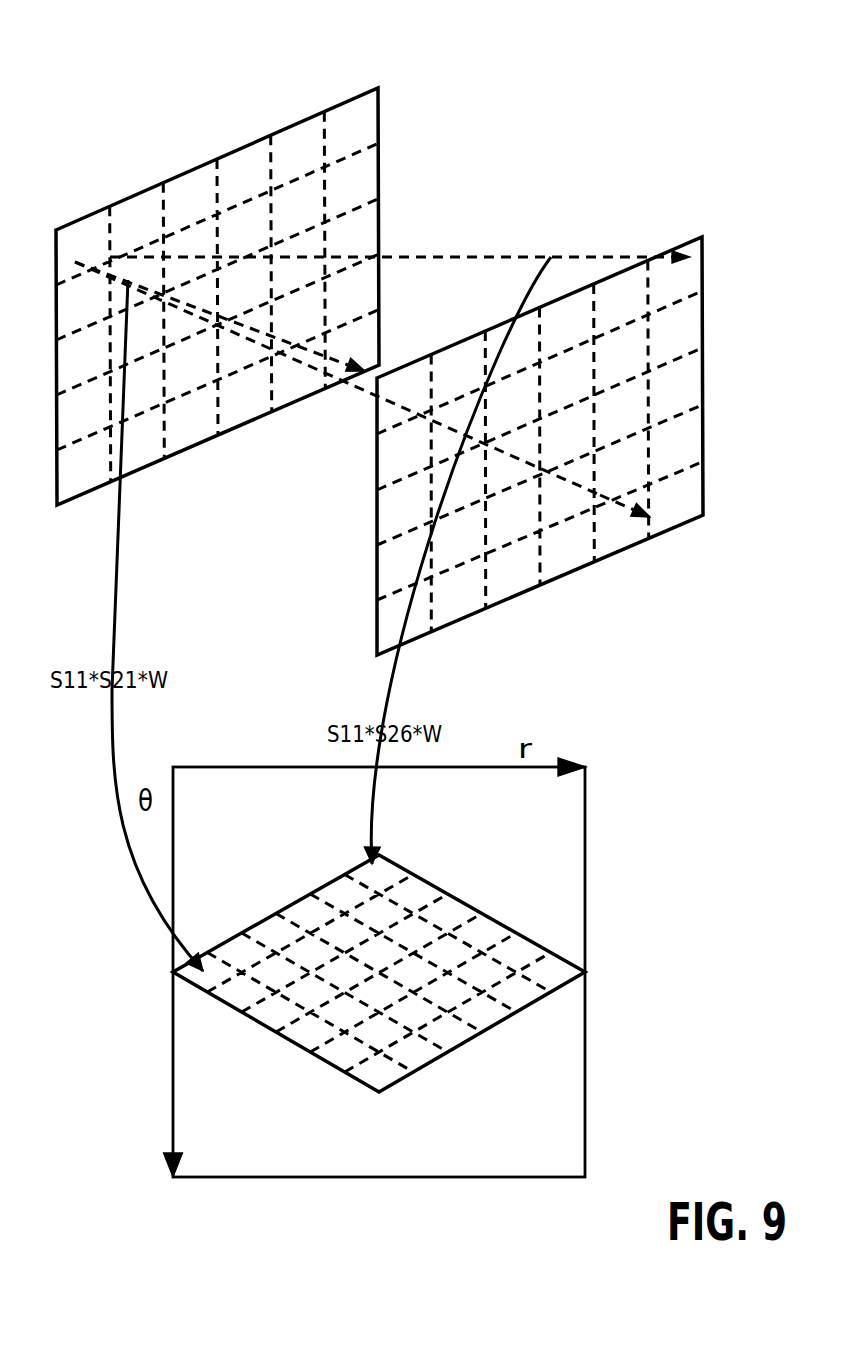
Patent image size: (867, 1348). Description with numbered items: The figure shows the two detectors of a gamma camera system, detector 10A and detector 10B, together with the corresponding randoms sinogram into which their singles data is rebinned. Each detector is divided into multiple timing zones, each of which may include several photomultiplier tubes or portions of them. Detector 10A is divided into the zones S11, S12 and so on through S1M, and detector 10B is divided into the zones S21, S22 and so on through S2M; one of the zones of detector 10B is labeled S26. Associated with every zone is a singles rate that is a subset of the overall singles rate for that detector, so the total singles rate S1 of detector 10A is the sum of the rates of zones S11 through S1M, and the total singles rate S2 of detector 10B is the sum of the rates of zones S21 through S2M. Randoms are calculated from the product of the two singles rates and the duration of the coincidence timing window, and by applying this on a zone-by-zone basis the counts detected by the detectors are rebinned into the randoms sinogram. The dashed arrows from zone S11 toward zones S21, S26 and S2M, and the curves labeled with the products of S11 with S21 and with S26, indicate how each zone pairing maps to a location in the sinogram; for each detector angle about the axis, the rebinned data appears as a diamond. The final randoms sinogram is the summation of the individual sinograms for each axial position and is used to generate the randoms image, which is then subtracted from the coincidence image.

The detector 10A is at (246, 256).
The detector 10B is at (571, 403).
The total singles rate S1 is at (217, 296).
The total singles rate S2 is at (540, 446).
The zone S11 is at (370, 361).
The zone S12 is at (142, 321).
The zone S1M is at (350, 250).
The zone S21 is at (410, 493).
The zone S22 is at (463, 469).
The zone S26 is at (670, 394).
The zone S2M is at (649, 502).